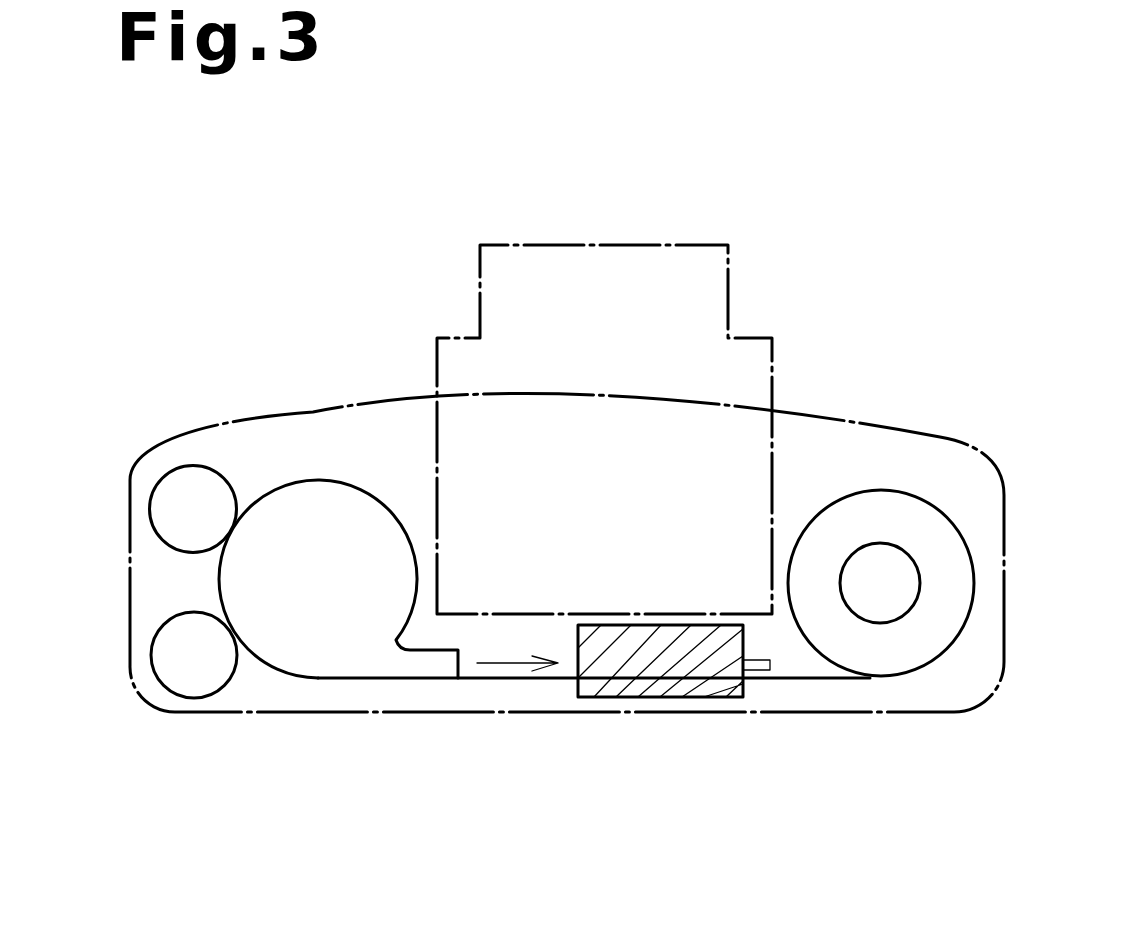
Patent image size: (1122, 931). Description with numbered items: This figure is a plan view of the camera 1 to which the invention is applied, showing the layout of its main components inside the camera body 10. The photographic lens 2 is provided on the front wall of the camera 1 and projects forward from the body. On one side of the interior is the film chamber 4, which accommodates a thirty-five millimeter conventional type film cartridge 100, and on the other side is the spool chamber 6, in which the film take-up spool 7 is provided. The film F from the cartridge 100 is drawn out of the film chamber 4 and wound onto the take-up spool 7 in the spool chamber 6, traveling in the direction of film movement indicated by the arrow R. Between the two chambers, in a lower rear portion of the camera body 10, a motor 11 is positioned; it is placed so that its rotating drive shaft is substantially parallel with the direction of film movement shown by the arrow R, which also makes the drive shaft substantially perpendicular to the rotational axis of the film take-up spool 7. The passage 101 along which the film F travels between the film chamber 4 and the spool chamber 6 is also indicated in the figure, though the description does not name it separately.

The camera 1 is at (611, 459).
The photographic lens 2 is at (437, 398).
The camera body 10 is at (949, 435).
The film chamber 4 is at (258, 672).
The film cartridge 100 is at (325, 630).
The film passage 101 is at (527, 681).
The arrow indicating direction of film movement R is at (502, 664).
The motor 11 is at (683, 652).
The film F is at (817, 676).
The spool chamber 6 is at (945, 649).
The film take-up spool 7 is at (890, 576).